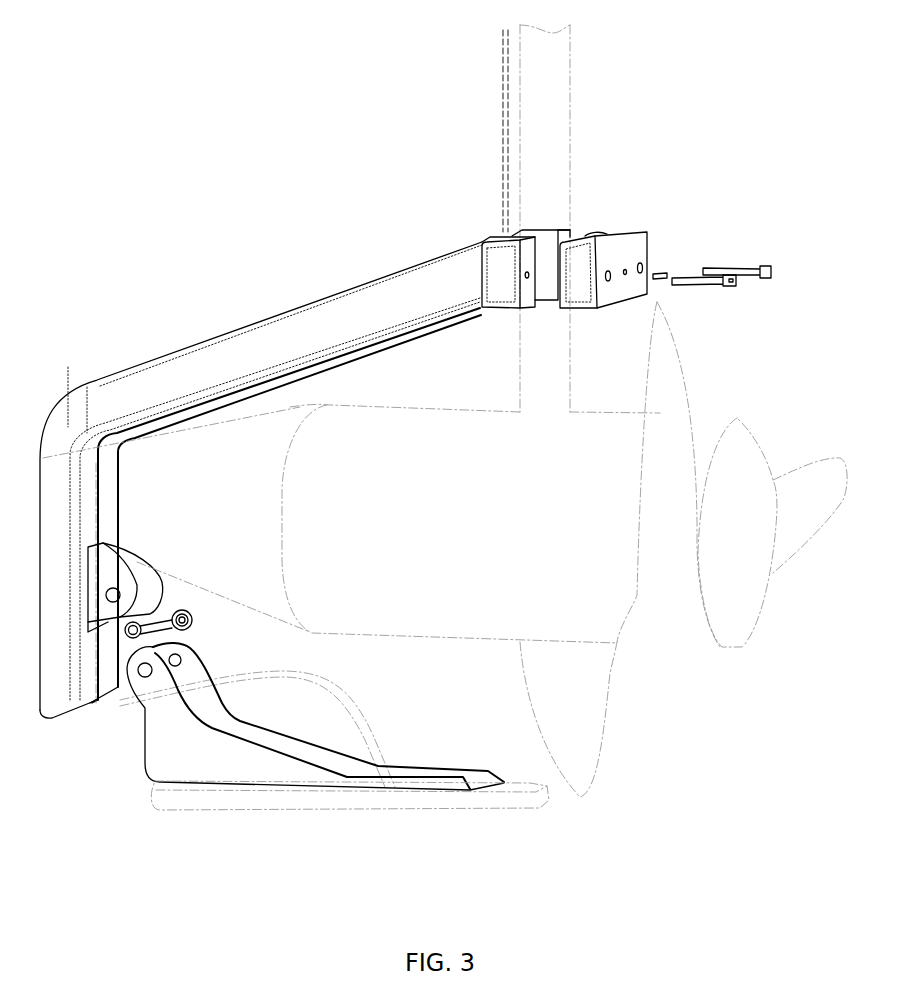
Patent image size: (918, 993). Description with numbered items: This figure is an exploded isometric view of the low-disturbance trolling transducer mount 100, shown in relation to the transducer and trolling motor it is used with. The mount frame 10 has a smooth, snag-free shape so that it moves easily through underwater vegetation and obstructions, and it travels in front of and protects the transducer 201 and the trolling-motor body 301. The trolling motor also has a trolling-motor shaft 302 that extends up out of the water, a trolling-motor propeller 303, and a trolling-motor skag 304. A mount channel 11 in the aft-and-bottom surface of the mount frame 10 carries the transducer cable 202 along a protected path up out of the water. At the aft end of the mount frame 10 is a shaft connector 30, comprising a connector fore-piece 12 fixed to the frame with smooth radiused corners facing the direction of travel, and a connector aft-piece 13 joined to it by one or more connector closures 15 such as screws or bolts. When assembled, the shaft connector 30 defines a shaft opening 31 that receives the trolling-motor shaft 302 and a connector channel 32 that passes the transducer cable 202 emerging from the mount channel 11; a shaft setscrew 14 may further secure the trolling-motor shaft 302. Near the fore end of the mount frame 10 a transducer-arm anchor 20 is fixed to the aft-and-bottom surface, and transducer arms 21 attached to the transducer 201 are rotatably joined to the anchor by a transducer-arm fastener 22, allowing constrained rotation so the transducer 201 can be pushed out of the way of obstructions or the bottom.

The low-disturbance trolling transducer mount 100 is at (200, 104).
The mount frame 10 is at (112, 386).
The mount channel 11 is at (298, 374).
The connector fore-piece 12 is at (498, 292).
The connector aft-piece 13 is at (577, 296).
The shaft setscrew 14 is at (660, 272).
The connector closures 15 is at (715, 270).
The transducer-arm anchor 20 is at (153, 592).
The transducer arms 21 is at (322, 758).
The transducer-arm fastener 22 is at (186, 627).
The shaft connector 30 is at (514, 341).
The shaft opening 31 is at (585, 220).
The connector channel 32 is at (512, 232).
The transducer 201 is at (348, 797).
The transducer cable 202 is at (503, 89).
The trolling-motor body 301 is at (426, 630).
The trolling-motor shaft 302 is at (558, 90).
The trolling-motor propeller 303 is at (680, 394).
The trolling-motor skag 304 is at (542, 660).